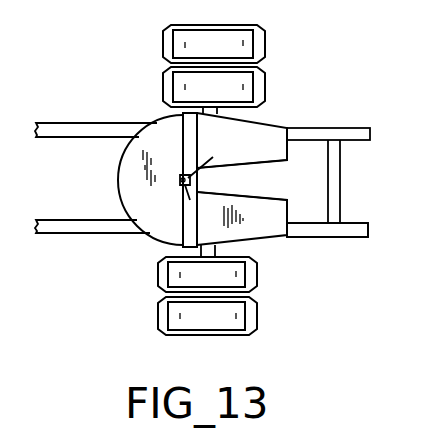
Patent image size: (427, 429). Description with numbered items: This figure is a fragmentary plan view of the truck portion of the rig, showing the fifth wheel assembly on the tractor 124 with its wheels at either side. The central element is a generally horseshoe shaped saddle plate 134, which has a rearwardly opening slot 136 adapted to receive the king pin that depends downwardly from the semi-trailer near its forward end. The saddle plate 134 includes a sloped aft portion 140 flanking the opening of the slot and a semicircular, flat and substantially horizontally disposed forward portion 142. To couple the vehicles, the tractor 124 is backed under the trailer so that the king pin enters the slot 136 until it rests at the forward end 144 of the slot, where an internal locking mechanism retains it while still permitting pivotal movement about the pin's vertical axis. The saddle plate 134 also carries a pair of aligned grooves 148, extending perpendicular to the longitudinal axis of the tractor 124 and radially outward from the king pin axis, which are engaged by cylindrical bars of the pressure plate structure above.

The tractor 124 is at (350, 240).
The saddle plate 134 is at (261, 238).
The rearwardly opening slot 136 is at (263, 181).
The sloped aft portion 140 is at (273, 132).
The forward portion 142 is at (150, 142).
The forward end 144 is at (178, 185).
The aligned grooves 148 is at (190, 152).